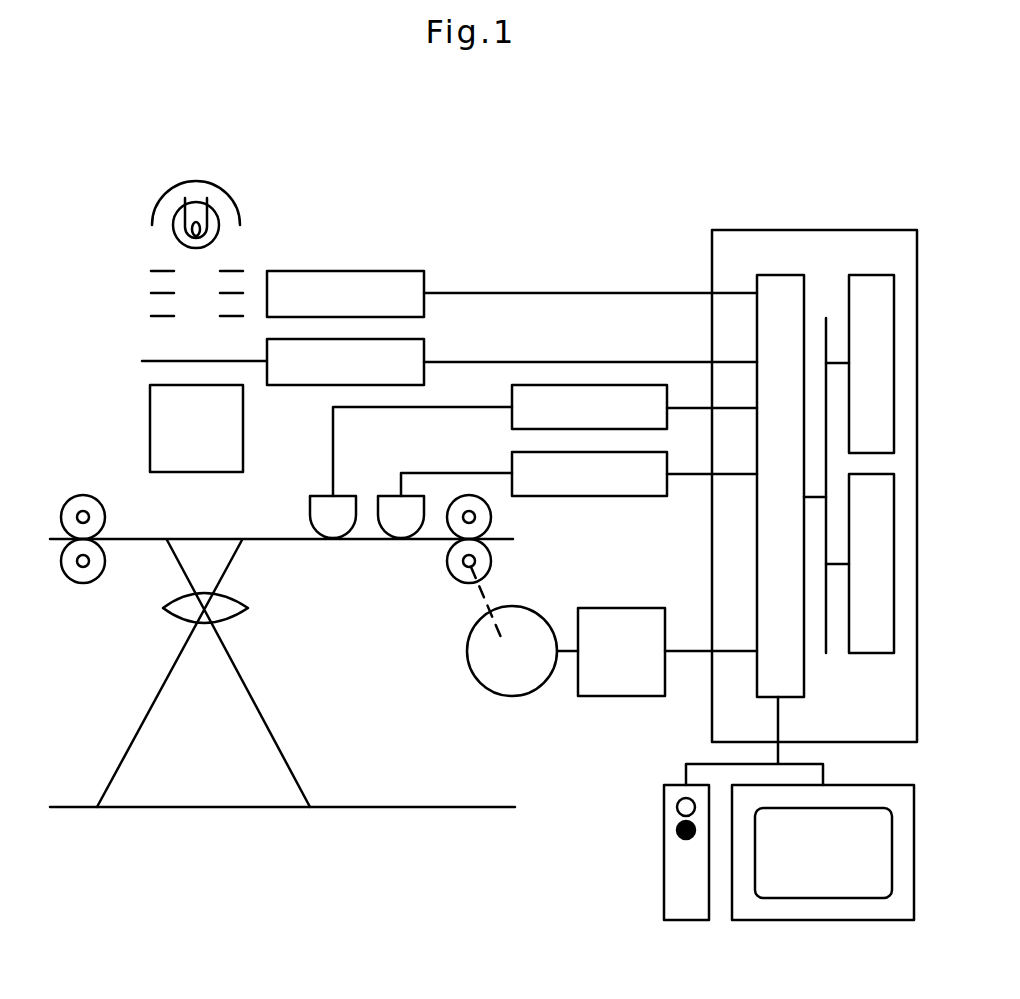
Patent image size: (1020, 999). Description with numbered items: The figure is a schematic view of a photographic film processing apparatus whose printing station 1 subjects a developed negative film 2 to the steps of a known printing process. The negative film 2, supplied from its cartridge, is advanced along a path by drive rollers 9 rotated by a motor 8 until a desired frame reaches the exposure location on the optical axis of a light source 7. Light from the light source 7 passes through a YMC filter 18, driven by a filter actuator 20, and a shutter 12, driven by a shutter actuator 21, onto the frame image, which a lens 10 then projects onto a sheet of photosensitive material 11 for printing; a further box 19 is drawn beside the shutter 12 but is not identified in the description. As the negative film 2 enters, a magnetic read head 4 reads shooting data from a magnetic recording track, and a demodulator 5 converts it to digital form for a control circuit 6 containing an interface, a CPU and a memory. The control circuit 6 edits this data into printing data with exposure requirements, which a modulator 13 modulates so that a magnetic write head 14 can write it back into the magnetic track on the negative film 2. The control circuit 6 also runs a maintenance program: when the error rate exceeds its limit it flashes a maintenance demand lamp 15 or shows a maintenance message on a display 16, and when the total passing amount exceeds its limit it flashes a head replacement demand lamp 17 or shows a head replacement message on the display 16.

The printing station 1 is at (354, 211).
The negative film 2 is at (119, 538).
The magnetic read head 4 is at (400, 530).
The demodulator 5 is at (583, 497).
The control circuit 6 is at (812, 228).
The light source 7 is at (187, 245).
The motor 8 is at (472, 674).
The drive rollers 9 is at (458, 583).
The lens 10 is at (175, 617).
The photosensitive material 11 is at (127, 808).
The shutter 12 is at (158, 363).
The modulator 13 is at (610, 385).
The magnetic write head 14 is at (332, 530).
The maintenance demand lamp 15 is at (677, 807).
The display 16 is at (838, 922).
The head replacement demand lamp 17 is at (678, 833).
The YMC filter 18 is at (150, 303).
The filter 19 is at (150, 432).
The filter actuator 20 is at (388, 270).
The shutter actuator 21 is at (425, 343).